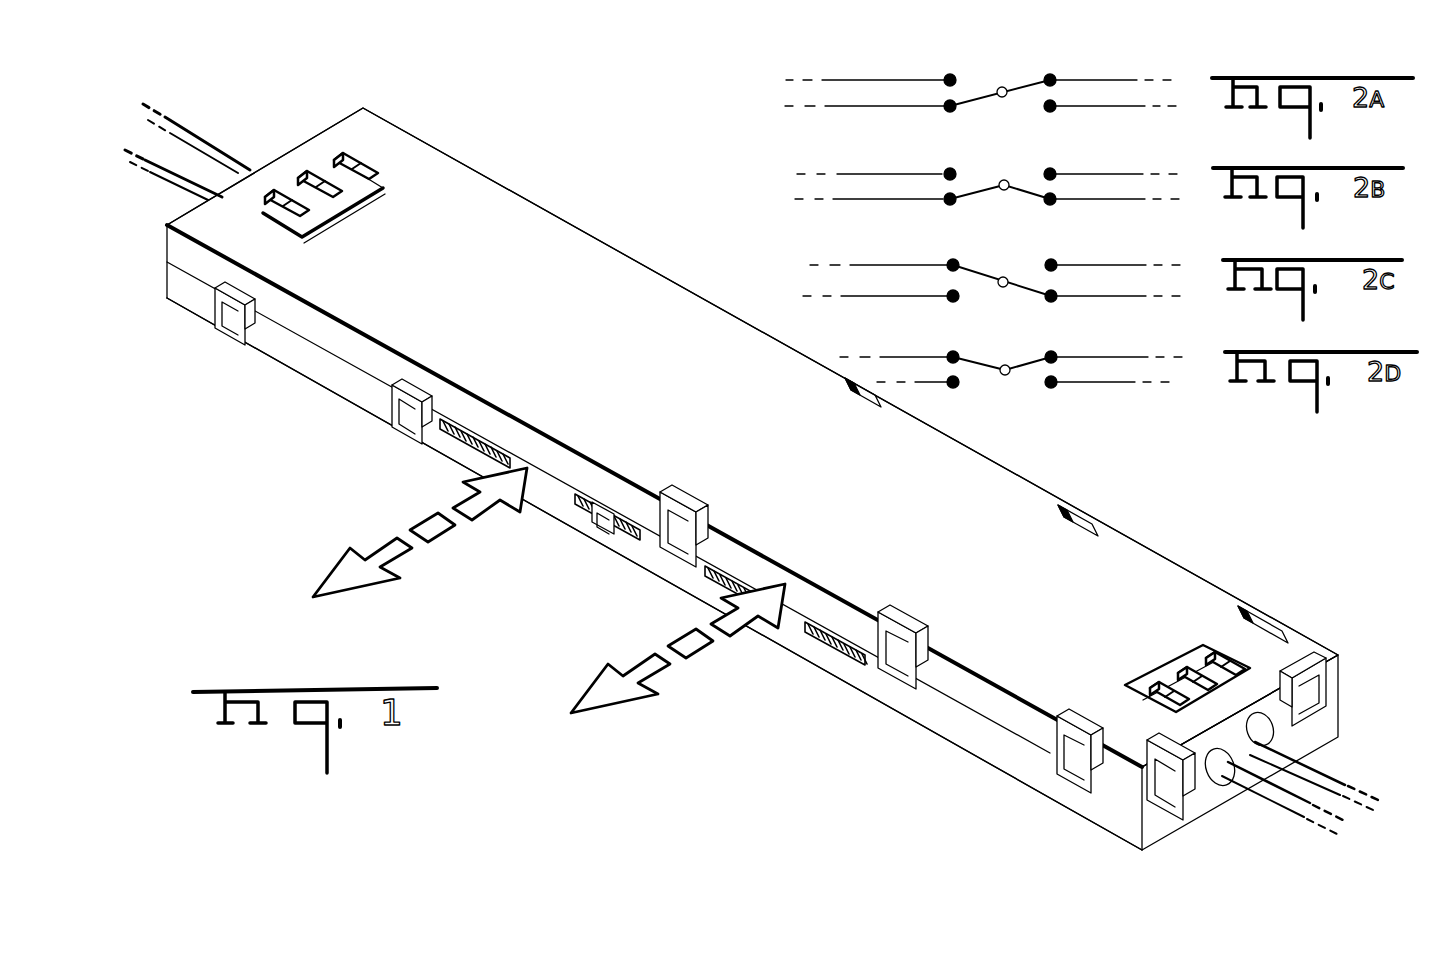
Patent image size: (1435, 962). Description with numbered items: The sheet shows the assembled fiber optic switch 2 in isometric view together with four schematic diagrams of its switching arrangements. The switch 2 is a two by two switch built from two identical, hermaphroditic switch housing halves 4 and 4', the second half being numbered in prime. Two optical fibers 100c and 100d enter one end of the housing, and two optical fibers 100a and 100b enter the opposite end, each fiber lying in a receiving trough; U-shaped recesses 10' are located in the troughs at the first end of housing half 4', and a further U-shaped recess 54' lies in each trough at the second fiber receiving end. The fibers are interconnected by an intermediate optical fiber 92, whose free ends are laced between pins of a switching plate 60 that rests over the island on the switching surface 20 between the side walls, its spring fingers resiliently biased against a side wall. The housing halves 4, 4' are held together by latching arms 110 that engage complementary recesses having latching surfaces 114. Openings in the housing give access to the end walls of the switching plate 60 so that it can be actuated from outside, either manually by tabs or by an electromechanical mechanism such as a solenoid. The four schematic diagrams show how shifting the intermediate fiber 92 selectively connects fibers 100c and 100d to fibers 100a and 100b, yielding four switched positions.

In FIG. 1, the switch 2 is at (553, 172).
In FIG. 1, the switch housing half 4 is at (654, 556).
In FIG. 1, the switch housing half 4' is at (752, 437).
In FIG. 1, the U-shaped recesses 10' is at (352, 156).
In FIG. 1, the switching surface 20 is at (598, 522).
In FIG. 1, the U-shaped recess 54' is at (1191, 620).
In FIG. 1, the switching plate 60 is at (567, 505).
In FIG. 2A, the intermediate optical fiber 92 is at (980, 97).
In FIG. 2D, the intermediate optical fiber 92 is at (977, 368).
In FIG. 1, the optical fiber 100a is at (1285, 793).
In FIG. 2A, the optical fiber 100a is at (1090, 108).
In FIG. 2D, the optical fiber 100a is at (1103, 384).
In FIG. 1, the optical fiber 100b is at (1316, 768).
In FIG. 2A, the optical fiber 100b is at (1110, 80).
In FIG. 2D, the optical fiber 100b is at (1116, 357).
In FIG. 1, the optical fiber 100c is at (192, 176).
In FIG. 2A, the optical fiber 100c is at (863, 108).
In FIG. 2D, the optical fiber 100c is at (924, 384).
In FIG. 1, the optical fiber 100d is at (229, 150).
In FIG. 2A, the optical fiber 100d is at (865, 80).
In FIG. 2D, the optical fiber 100d is at (905, 357).
In FIG. 1, the latching arms 110 is at (1057, 738).
In FIG. 1, the latching surfaces 114 is at (1328, 688).